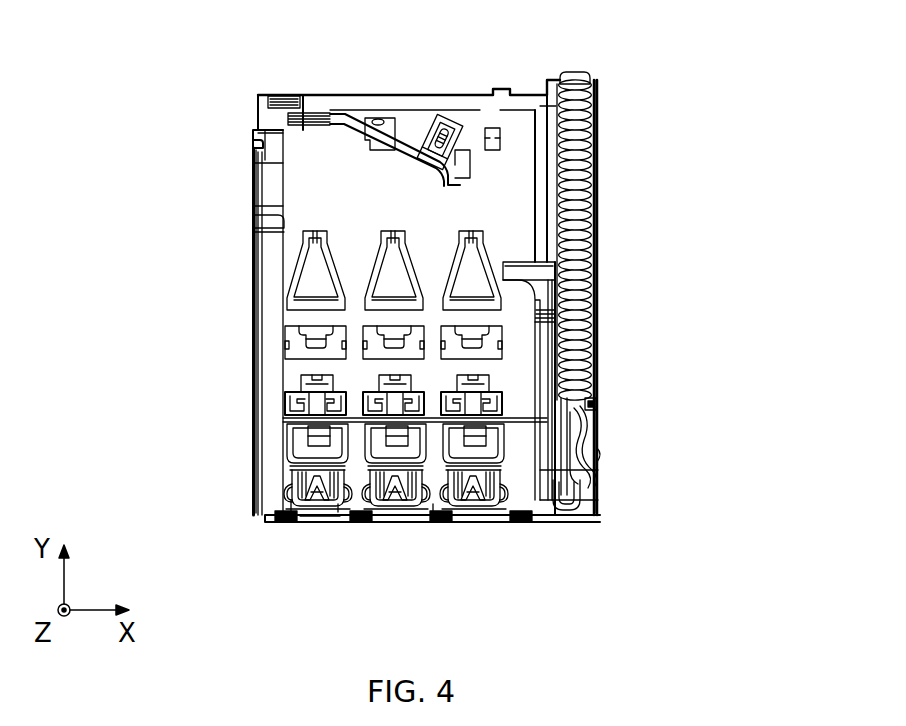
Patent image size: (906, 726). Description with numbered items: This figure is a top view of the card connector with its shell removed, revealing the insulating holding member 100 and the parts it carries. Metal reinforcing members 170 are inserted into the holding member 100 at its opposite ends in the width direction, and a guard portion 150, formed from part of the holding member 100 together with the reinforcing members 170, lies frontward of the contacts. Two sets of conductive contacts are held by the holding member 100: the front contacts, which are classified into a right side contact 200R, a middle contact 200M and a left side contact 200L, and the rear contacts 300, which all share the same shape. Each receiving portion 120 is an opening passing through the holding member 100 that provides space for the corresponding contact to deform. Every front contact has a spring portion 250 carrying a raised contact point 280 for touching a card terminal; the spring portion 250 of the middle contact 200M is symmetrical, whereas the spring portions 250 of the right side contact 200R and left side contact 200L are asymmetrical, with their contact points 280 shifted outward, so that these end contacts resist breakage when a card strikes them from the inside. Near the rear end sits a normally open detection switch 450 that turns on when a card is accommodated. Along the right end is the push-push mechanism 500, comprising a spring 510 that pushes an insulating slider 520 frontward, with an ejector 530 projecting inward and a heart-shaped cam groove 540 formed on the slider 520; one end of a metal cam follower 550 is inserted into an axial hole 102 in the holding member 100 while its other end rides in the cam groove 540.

The holding member 100 is at (285, 381).
The axial hole 102 is at (578, 480).
The receiving portion 120 is at (386, 453).
The guard portion 150 is at (320, 530).
The reinforcing member 170 is at (597, 205).
The left side contact 200L is at (290, 518).
The middle contact 200M is at (392, 516).
The right side contact 200R is at (486, 516).
The spring portion 250 is at (292, 506).
The contact point 280 is at (444, 486).
The contact 300 is at (470, 233).
The detection switch 450 is at (424, 148).
The push-push mechanism 500 is at (685, 250).
The spring 510 is at (597, 353).
The slider 520 is at (597, 302).
The ejector 530 is at (597, 268).
The cam groove 540 is at (597, 458).
The cam follower 550 is at (594, 402).